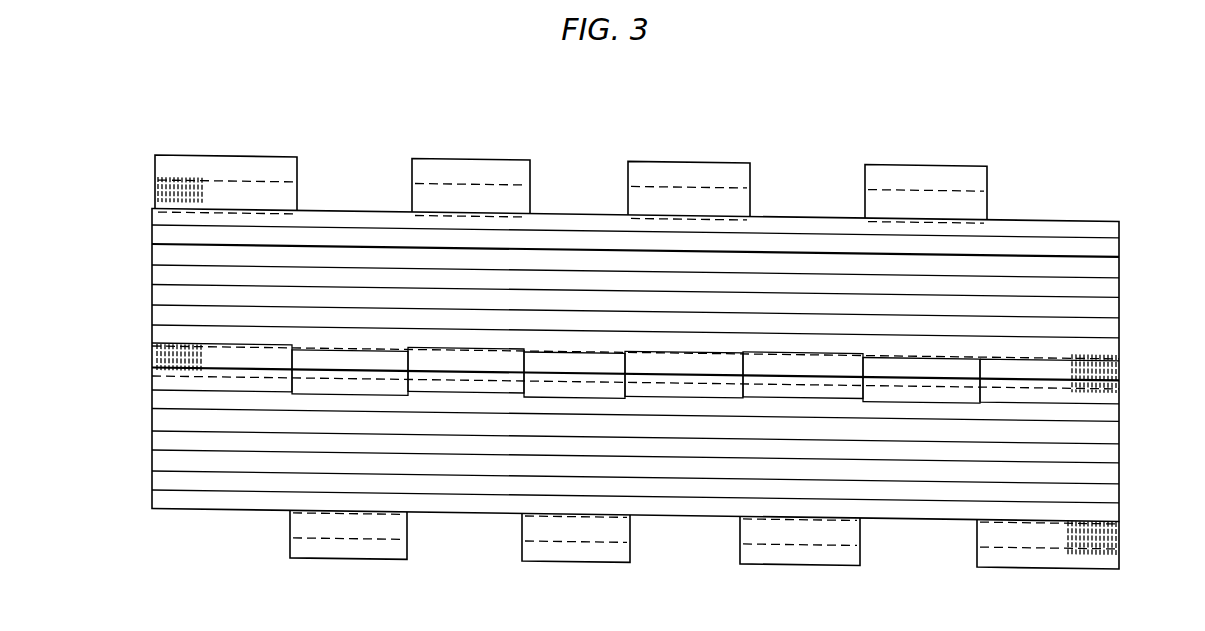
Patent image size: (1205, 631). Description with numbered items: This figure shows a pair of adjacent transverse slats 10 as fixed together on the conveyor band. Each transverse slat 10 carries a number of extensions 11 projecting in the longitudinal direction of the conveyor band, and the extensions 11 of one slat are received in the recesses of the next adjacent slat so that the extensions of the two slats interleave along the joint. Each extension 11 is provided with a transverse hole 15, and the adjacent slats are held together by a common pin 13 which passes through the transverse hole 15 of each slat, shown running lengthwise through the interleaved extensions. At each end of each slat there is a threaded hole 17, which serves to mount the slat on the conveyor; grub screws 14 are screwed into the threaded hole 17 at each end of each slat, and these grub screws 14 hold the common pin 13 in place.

The transverse slat 10 is at (133, 226).
The extension 11 is at (740, 167).
The common pin 13 is at (213, 352).
The grub screw 14 is at (158, 358).
The transverse hole 15 is at (490, 185).
The threaded hole 17 is at (178, 180).